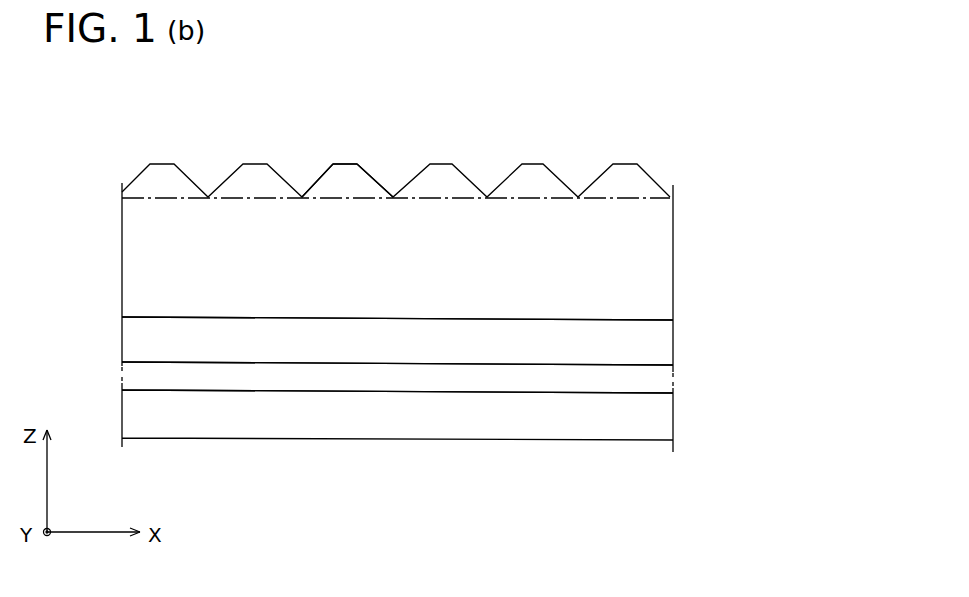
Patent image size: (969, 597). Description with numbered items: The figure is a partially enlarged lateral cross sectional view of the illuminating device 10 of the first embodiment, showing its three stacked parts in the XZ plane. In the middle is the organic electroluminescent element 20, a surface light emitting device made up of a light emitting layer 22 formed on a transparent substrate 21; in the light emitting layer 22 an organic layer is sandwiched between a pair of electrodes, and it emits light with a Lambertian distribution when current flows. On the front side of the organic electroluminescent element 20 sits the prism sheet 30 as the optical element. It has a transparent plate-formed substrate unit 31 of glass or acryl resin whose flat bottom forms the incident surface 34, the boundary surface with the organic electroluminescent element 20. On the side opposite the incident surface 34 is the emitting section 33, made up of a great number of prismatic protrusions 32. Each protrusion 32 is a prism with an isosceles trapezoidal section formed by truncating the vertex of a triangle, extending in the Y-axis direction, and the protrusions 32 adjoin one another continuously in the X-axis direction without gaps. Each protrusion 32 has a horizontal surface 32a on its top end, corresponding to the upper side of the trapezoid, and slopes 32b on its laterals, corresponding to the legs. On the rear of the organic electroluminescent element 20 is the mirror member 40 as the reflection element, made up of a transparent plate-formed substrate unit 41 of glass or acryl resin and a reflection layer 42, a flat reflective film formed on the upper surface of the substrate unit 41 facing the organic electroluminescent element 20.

The illuminating device 10 is at (636, 121).
The prism sheet 30 is at (113, 163).
The substrate unit 31 is at (673, 247).
The protrusion 32 is at (192, 178).
The horizontal surface 32a is at (346, 165).
The slope 32b is at (322, 175).
The emitting section 33 is at (676, 167).
The incident surface 34 is at (673, 319).
The organic electroluminescent element 20 is at (113, 318).
The transparent substrate 21 is at (660, 343).
The light emitting layer 22 is at (663, 368).
The mirror member 40 is at (113, 390).
The substrate unit 41 is at (663, 428).
The reflection layer 42 is at (660, 397).